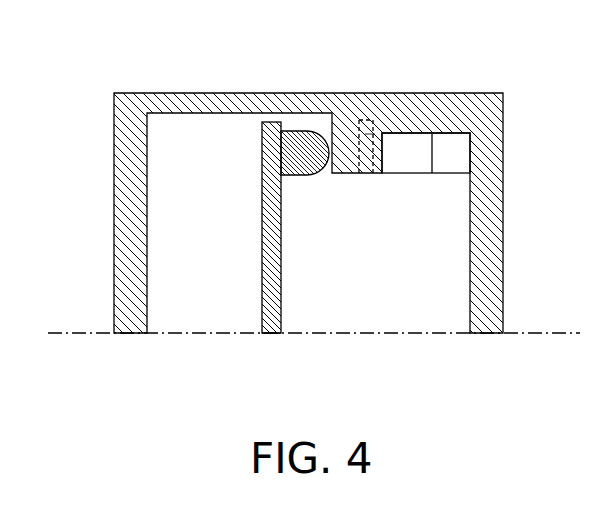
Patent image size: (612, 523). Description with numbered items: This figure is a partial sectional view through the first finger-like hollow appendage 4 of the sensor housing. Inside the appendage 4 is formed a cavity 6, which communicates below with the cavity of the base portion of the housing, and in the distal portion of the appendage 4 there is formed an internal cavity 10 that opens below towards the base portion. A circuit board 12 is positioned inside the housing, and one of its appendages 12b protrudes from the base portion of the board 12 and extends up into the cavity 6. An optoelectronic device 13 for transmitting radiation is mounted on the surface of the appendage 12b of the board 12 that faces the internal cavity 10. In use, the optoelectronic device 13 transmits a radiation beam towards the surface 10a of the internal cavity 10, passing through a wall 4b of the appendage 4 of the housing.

The first finger-like hollow appendage 4 is at (128, 158).
The wall of the appendage 4b is at (350, 152).
The cavity 6 is at (198, 172).
The internal cavity 10 is at (452, 152).
The surface of the cavity 10a is at (370, 128).
The circuit board 12 is at (285, 285).
The appendage of the board 12b is at (268, 335).
The optoelectronic device 13 is at (298, 131).